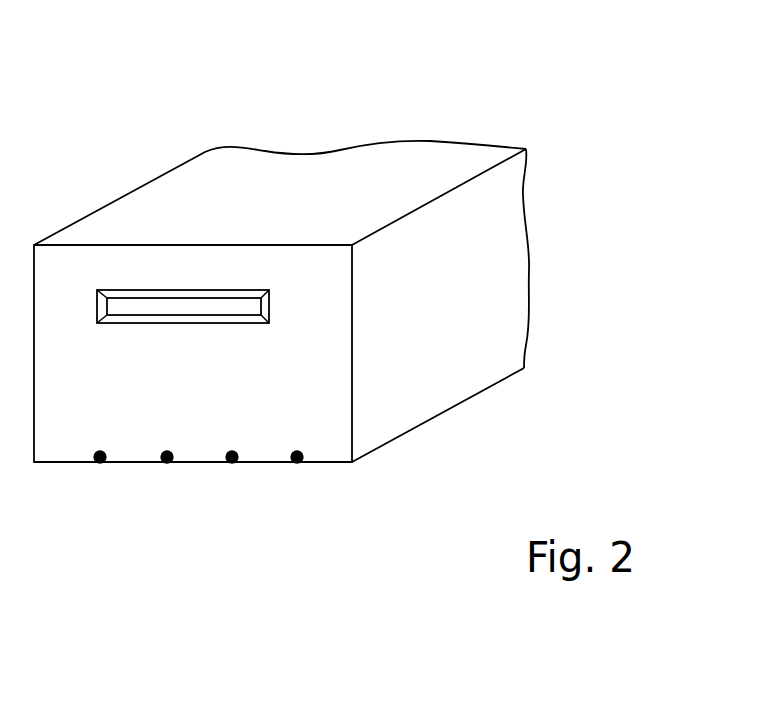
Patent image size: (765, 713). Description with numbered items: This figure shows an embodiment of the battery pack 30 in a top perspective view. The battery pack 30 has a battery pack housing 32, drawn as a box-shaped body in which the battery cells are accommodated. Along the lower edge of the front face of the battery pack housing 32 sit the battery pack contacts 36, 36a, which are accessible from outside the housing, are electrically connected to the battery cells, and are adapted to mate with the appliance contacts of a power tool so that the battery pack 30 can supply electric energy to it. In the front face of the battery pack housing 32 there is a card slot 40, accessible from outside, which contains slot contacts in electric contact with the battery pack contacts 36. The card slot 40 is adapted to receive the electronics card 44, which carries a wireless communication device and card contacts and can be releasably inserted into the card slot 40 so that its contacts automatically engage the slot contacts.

The battery pack 30 is at (418, 114).
The battery pack housing 32 is at (442, 383).
The battery pack contacts 36 is at (232, 463).
The contact pins 36a is at (100, 463).
The card slot 40 is at (197, 287).
The electronics card 44 is at (128, 306).